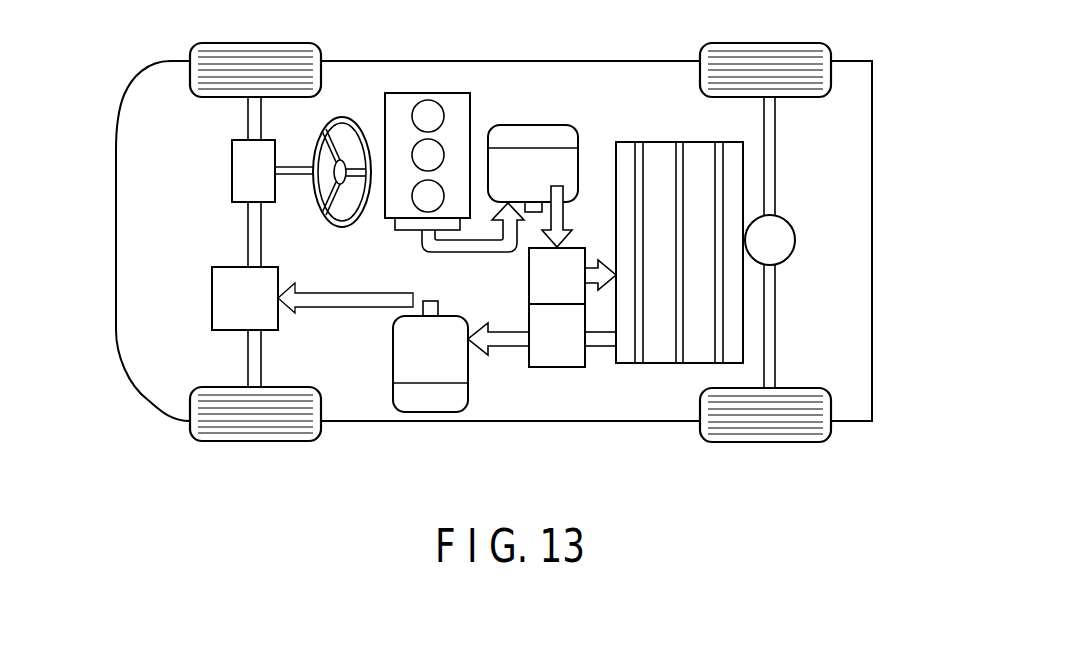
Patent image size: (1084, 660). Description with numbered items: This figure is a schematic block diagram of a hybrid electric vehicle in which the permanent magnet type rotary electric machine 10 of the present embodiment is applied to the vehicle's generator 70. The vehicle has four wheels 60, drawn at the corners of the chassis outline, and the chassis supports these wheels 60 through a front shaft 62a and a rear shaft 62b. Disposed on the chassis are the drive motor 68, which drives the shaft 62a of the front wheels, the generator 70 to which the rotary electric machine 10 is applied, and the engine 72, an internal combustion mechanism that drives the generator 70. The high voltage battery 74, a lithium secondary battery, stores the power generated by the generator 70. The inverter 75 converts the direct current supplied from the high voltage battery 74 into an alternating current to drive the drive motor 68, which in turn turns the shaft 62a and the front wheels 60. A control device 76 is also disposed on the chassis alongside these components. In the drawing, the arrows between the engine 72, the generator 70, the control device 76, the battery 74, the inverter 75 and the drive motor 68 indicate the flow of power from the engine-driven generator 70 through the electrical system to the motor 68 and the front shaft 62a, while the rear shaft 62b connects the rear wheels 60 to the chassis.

The wheels 60 is at (280, 50).
The shaft 62a is at (248, 233).
The shaft 62b is at (768, 163).
The drive motor 68 is at (432, 397).
The generator 70 is at (538, 123).
The rotary electric machine 10 is at (539, 135).
The engine 72 is at (427, 92).
The high voltage battery 74 is at (657, 347).
The inverter 75 is at (557, 367).
The control device 76 is at (529, 278).